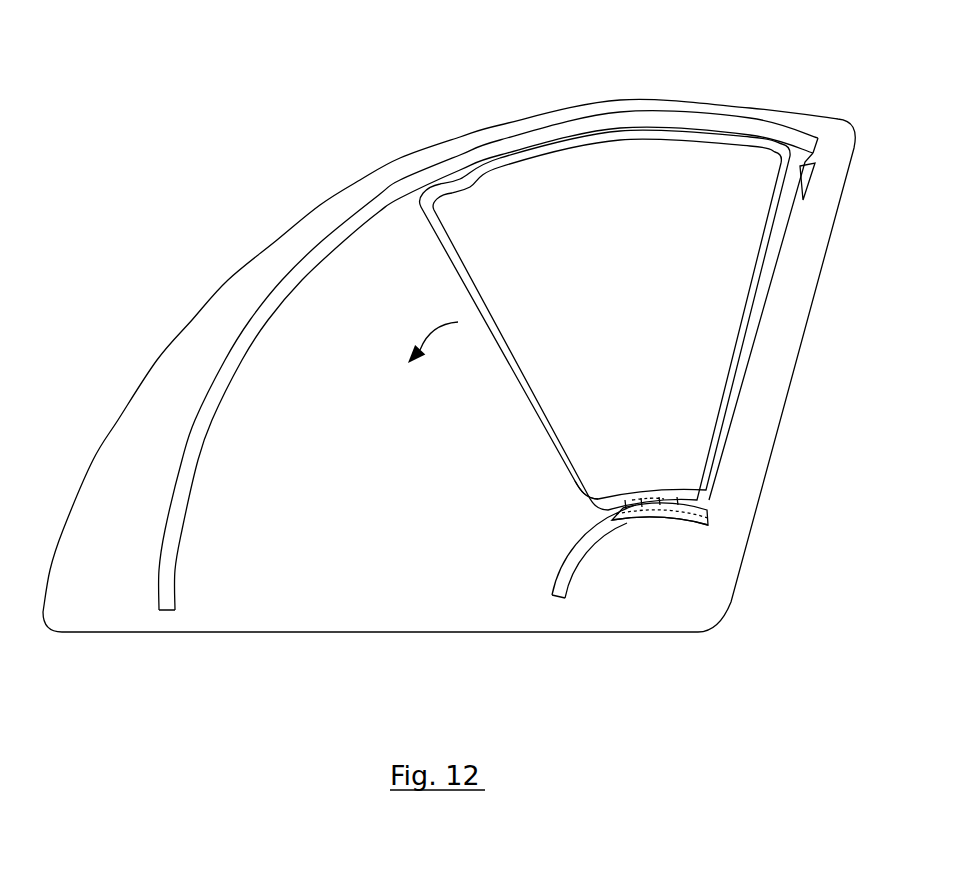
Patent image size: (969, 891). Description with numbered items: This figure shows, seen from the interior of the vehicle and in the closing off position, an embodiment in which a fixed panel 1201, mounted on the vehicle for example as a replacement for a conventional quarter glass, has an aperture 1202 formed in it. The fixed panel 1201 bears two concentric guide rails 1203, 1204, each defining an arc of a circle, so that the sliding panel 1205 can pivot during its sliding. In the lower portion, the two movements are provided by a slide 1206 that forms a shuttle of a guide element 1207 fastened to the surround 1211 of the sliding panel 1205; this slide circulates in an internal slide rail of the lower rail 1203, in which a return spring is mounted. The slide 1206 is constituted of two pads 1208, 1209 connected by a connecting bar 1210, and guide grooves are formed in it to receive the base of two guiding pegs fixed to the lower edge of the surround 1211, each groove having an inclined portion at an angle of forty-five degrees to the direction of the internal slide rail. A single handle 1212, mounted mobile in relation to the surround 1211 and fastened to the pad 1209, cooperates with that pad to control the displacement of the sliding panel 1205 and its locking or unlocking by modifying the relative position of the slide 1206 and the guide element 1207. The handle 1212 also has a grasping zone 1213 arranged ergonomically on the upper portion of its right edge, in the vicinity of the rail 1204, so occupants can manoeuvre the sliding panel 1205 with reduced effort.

The fixed panel 1201 is at (297, 580).
The aperture 1202 is at (578, 217).
The lower rail 1203 is at (553, 598).
The guide rail 1204 is at (168, 577).
The sliding panel 1205 is at (569, 353).
The slide 1206 is at (674, 541).
The guide element 1207 is at (726, 586).
The pad 1208 is at (615, 525).
The pad 1209 is at (705, 522).
The connecting bar 1210 is at (637, 527).
The surround 1211 is at (580, 493).
The handle 1212 is at (611, 353).
The grasping zone 1213 is at (823, 139).